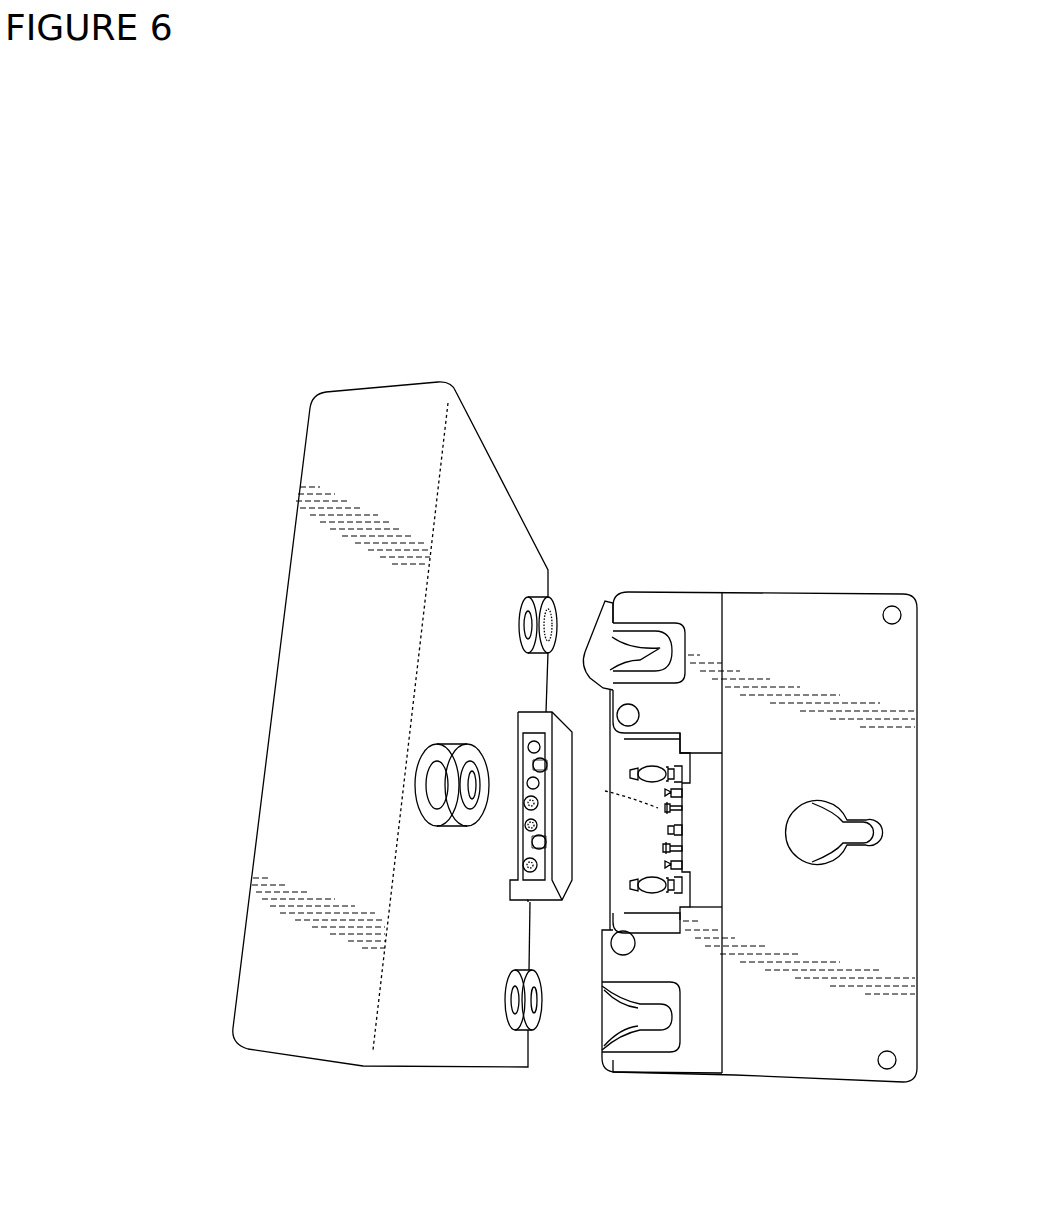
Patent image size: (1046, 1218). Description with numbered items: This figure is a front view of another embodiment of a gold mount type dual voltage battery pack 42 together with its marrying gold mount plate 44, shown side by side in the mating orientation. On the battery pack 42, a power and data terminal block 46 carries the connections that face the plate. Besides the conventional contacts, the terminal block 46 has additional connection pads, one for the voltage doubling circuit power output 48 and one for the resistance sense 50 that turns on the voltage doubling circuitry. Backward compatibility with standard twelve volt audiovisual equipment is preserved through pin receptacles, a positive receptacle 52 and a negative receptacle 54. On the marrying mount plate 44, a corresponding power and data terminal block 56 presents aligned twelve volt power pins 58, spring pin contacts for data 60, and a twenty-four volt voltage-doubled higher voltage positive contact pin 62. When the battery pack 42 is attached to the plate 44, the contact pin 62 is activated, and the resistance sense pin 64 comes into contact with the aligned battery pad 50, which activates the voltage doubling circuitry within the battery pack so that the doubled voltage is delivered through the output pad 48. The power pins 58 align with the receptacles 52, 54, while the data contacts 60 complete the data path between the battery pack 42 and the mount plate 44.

The gold mount type dual voltage battery pack 42 is at (307, 585).
The marrying gold mount plate 44 is at (751, 610).
The power and data terminal block 46 is at (538, 887).
The voltage doubling circuit power output 48 is at (525, 803).
The resistance sense 50 is at (522, 825).
The positive pin receptacle 52 is at (526, 748).
The negative pin receptacle 54 is at (520, 866).
The power and data terminal block 56 is at (705, 824).
The 12 v power pins 58 is at (636, 774).
The spring pin contacts for data 60 is at (662, 794).
The 24 v voltage-doubled higher voltage positive contact pin 62 is at (668, 830).
The resistance sense pin 64 is at (664, 849).